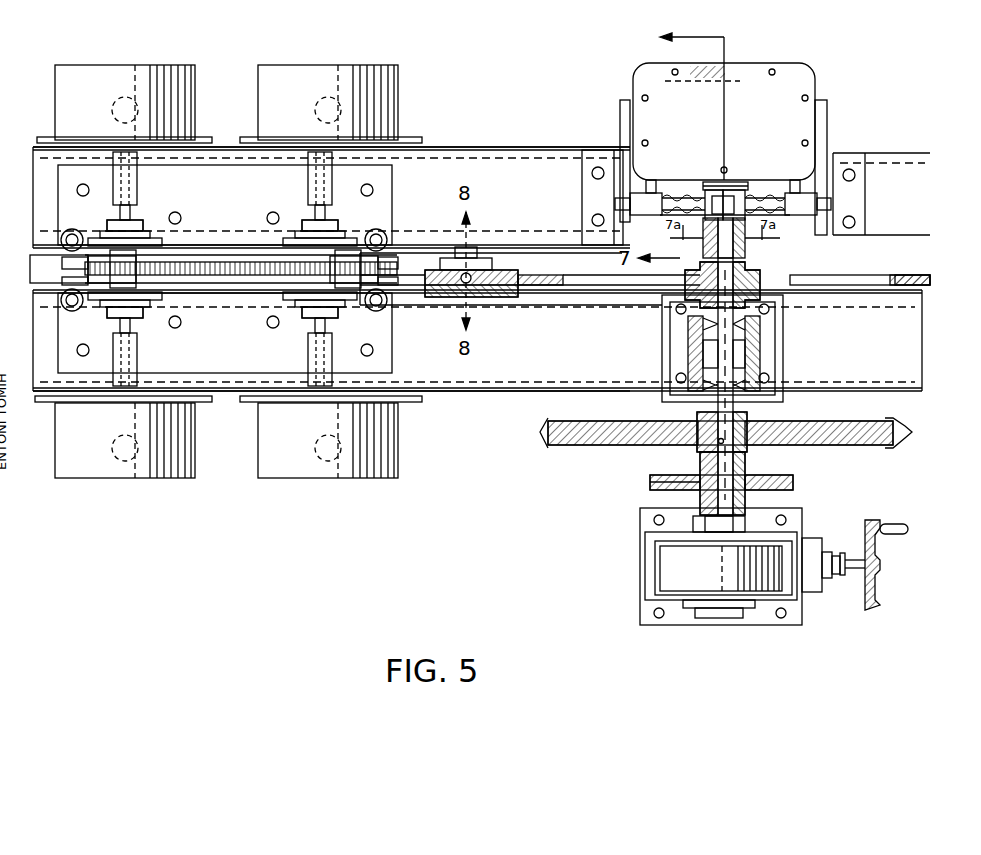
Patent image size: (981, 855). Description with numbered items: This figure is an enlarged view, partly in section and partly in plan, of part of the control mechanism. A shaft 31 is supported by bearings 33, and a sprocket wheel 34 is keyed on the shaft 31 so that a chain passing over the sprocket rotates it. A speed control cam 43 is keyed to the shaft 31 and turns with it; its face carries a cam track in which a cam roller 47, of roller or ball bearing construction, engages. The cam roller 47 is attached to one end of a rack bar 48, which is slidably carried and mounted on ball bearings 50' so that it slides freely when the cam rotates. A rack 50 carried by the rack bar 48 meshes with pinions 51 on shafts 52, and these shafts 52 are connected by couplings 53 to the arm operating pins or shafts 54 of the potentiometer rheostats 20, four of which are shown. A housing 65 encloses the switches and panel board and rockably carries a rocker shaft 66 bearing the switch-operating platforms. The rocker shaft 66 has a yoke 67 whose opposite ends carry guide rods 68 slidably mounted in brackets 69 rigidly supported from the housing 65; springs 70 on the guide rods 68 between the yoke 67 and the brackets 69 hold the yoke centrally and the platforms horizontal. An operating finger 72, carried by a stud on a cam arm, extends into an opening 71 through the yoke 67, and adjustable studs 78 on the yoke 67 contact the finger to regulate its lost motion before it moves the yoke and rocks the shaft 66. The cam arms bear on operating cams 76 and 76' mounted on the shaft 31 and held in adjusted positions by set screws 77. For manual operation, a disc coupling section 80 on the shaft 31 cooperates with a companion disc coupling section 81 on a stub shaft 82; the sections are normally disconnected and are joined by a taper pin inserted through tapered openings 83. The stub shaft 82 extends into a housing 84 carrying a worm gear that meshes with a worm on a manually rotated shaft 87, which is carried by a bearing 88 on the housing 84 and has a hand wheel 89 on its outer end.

The potentiometer rheostat 20 is at (170, 95).
The shaft 31 is at (740, 245).
The bearings 33 is at (756, 332).
The sprocket wheel 34 is at (798, 442).
The speed control cam 43 is at (915, 280).
The cam roller 47 is at (455, 290).
The rack bar 48 is at (50, 265).
The rack 50 is at (250, 265).
The ball bearings 50' is at (227, 259).
The pinions 51 is at (142, 268).
The shafts 52 is at (122, 213).
The couplings 53 is at (138, 183).
The arm operating pins or shafts 54 is at (125, 152).
The housing 65 is at (800, 80).
The rocker shaft 66 is at (730, 196).
The yoke 67 is at (700, 197).
The guide rods 68 is at (640, 204).
The brackets 69 is at (640, 200).
The springs 70 is at (700, 222).
The opening 71 is at (716, 206).
The operating finger 72 is at (714, 196).
The operating cam 76 is at (763, 177).
The operating cam 76' is at (686, 248).
The set screws 77 is at (745, 214).
The adjustable studs 78 is at (665, 216).
The disc coupling section 80 is at (795, 480).
The companion disc coupling section 81 is at (795, 489).
The stub shaft 82 is at (718, 512).
The tapered openings 83 is at (660, 478).
The housing 84 is at (668, 560).
The manually rotated shaft 87 is at (846, 578).
The bearing 88 is at (828, 582).
The hand wheel 89 is at (872, 608).